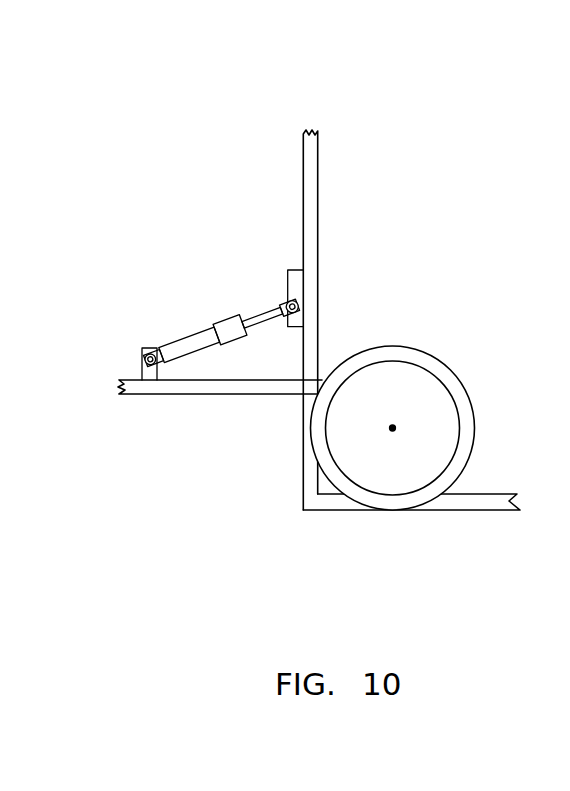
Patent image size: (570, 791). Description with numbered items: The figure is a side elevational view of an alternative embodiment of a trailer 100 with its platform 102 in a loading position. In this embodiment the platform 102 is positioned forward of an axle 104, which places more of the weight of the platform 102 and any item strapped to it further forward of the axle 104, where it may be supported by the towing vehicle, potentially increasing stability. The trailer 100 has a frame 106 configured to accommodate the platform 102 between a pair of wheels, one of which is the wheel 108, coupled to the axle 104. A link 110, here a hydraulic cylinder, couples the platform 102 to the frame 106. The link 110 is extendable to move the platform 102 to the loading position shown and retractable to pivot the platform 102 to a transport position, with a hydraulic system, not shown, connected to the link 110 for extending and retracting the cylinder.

The trailer 100 is at (344, 301).
The platform 102 is at (318, 226).
The axle 104 is at (395, 427).
The frame 106 is at (186, 392).
The wheel 108 is at (473, 427).
The link 110 is at (217, 337).